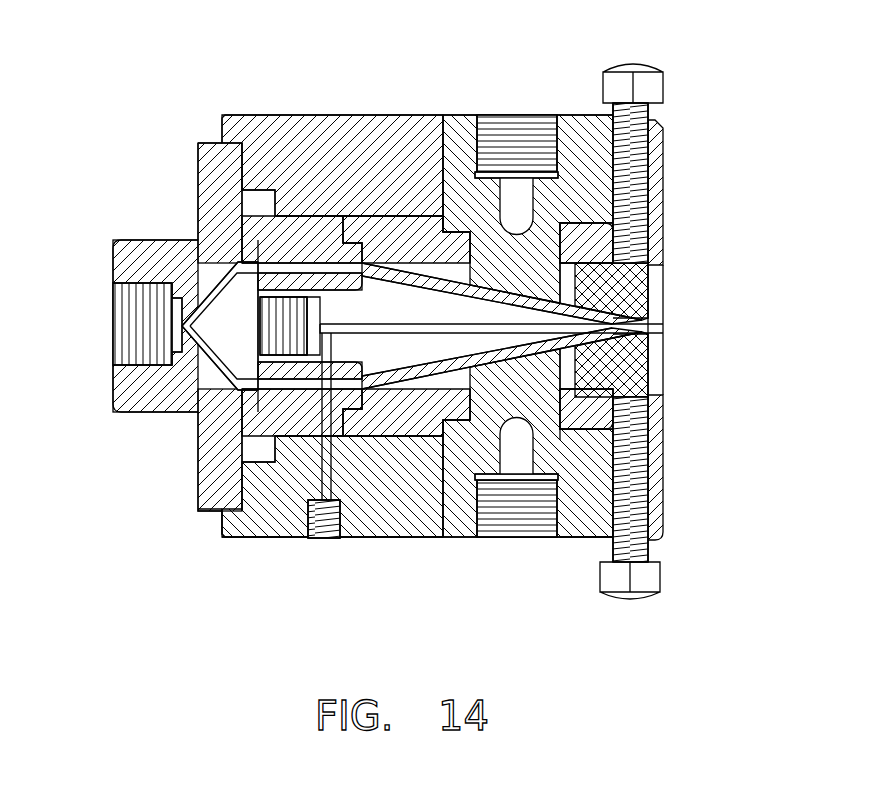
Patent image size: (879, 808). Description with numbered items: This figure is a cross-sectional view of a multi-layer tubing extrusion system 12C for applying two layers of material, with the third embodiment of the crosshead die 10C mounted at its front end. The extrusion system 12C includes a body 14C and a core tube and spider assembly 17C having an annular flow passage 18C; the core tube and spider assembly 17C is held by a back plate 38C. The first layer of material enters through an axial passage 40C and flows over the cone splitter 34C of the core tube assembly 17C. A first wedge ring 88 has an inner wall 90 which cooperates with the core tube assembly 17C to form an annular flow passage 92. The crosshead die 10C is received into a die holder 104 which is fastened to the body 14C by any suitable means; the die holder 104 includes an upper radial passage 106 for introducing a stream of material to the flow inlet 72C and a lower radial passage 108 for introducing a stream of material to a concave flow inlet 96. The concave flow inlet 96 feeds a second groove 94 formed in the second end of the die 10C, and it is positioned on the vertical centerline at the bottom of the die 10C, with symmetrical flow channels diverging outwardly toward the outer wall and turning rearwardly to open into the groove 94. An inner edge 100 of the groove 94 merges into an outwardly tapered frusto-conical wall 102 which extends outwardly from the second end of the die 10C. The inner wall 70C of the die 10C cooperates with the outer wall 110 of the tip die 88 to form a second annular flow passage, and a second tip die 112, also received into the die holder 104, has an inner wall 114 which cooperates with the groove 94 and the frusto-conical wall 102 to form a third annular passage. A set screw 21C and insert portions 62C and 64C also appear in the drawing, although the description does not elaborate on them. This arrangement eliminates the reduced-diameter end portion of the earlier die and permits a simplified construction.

The crosshead die 10C is at (578, 545).
The multi-layer tubing extrusion system 12C is at (277, 106).
The body 14C is at (218, 545).
The core tube and spider assembly 17C is at (296, 200).
The annular flow passage 18C is at (323, 270).
The set screw 21C is at (305, 488).
The cone splitter 34C is at (195, 414).
The back plate 38C is at (113, 412).
The axial passage 40C is at (186, 298).
The upper spray insert 62C is at (447, 218).
The lower spray insert 64C is at (437, 440).
The inner wall 70C is at (646, 380).
The flow inlet 72C is at (664, 209).
The first wedge ring 88 is at (452, 205).
The inner wall 90 is at (393, 265).
The annular flow passage 92 is at (393, 380).
The second groove 94 is at (640, 290).
The concave flow inlet 96 is at (557, 440).
The inner edge 100 is at (648, 324).
The frusto-conical wall 102 is at (650, 336).
The die holder 104 is at (606, 112).
The upper radial passage 106 is at (512, 168).
The lower radial passage 108 is at (500, 435).
The outer wall 110 is at (578, 224).
The second tip die 112 is at (647, 362).
The inner wall 114 is at (646, 445).